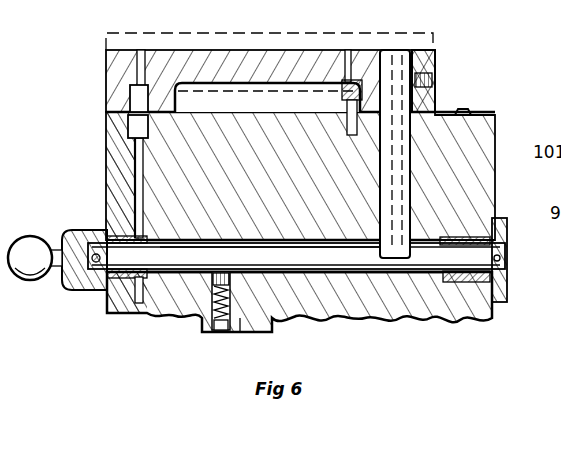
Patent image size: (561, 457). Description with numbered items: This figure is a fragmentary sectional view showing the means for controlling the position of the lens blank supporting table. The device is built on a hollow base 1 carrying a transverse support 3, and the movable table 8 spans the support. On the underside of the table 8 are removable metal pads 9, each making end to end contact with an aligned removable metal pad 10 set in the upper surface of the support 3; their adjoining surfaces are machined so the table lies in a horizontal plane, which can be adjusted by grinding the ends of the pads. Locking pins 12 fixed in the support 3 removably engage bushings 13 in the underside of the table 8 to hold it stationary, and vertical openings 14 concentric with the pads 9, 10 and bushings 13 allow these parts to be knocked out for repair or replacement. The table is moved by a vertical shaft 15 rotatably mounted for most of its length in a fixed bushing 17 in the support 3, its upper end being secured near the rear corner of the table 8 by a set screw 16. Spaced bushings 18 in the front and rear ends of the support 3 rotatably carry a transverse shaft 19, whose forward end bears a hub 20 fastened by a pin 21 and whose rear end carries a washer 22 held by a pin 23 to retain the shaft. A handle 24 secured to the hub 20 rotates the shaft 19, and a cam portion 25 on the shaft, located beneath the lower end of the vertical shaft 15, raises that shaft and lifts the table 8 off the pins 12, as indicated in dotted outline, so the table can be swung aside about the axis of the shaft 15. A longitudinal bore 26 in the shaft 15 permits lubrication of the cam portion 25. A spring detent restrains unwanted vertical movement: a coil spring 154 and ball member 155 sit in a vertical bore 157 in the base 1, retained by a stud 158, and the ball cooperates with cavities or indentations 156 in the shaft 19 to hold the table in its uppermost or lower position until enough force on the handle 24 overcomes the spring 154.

The hollow base 1 is at (326, 315).
The transverse support 3 is at (112, 173).
The movable table 8 is at (106, 61).
The removable metal pad 9 is at (131, 99).
The removable metal pad 10 is at (130, 127).
The locking pin 12 is at (347, 128).
The bushing 13 is at (339, 84).
The vertical opening 14 is at (141, 50).
The vertical shaft 15 is at (410, 53).
The set screw 16 is at (433, 82).
The fixed bushing 17 is at (418, 158).
The spaced bushing 18 is at (116, 313).
The transverse shaft 19 is at (508, 266).
The hub 20 is at (70, 292).
The pin 21 is at (101, 258).
The washer 22 is at (508, 290).
The pin 23 is at (500, 258).
The handle 24 is at (30, 236).
The cam portion 25 is at (380, 262).
The longitudinal bore 26 is at (398, 50).
The coil spring 154 is at (204, 312).
The ball member 155 is at (232, 272).
The cavity or indentation 156 is at (212, 247).
The vertical bore 157 is at (240, 333).
The stud 158 is at (216, 332).